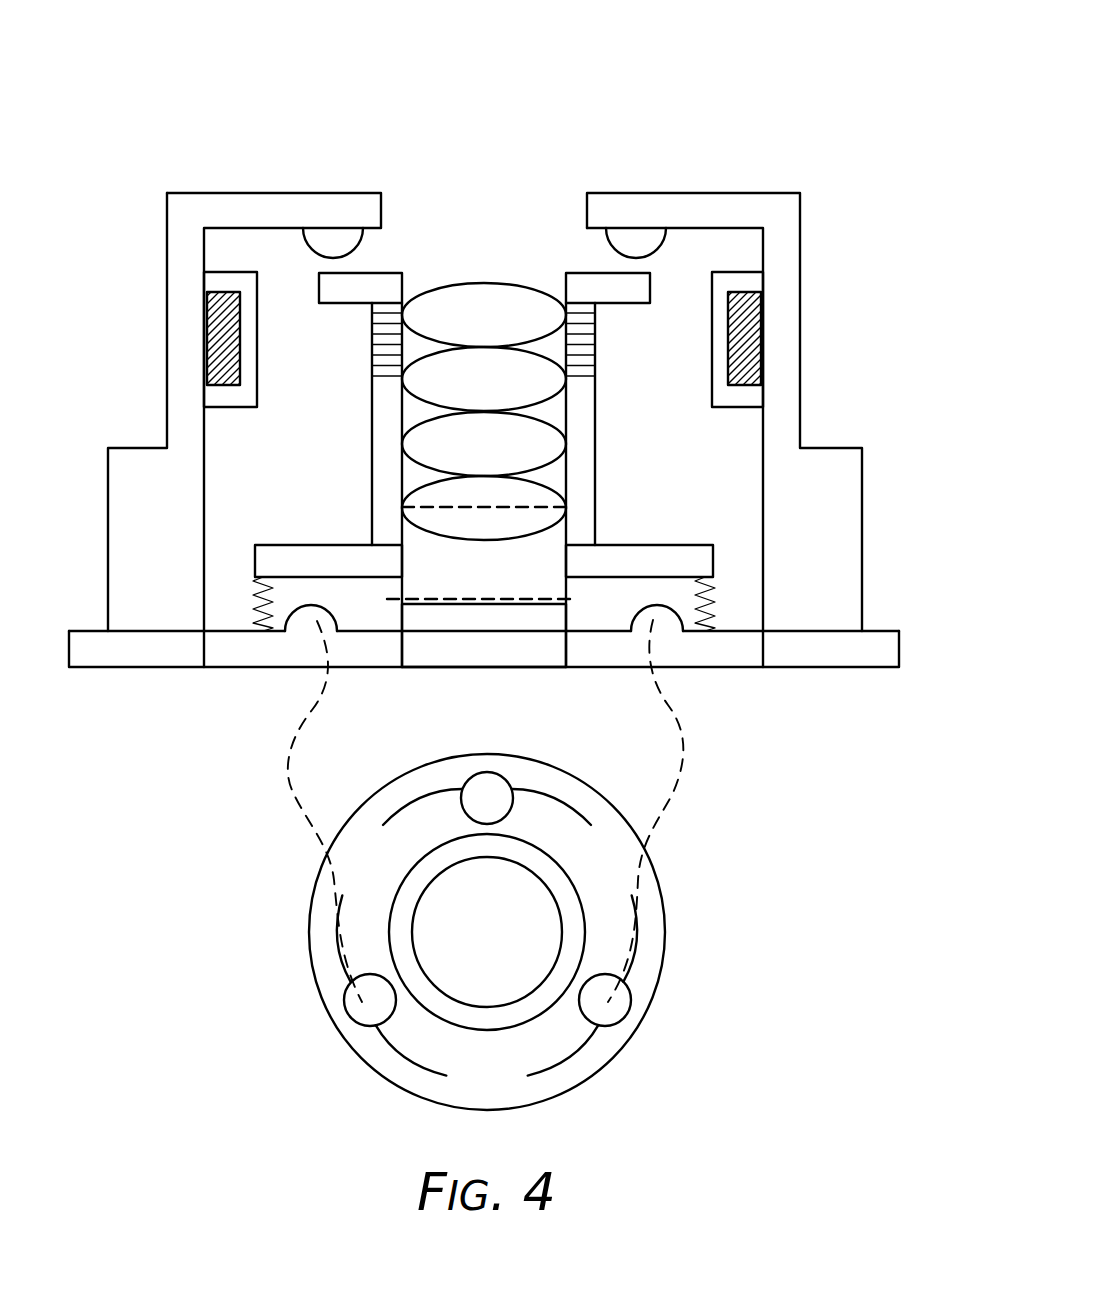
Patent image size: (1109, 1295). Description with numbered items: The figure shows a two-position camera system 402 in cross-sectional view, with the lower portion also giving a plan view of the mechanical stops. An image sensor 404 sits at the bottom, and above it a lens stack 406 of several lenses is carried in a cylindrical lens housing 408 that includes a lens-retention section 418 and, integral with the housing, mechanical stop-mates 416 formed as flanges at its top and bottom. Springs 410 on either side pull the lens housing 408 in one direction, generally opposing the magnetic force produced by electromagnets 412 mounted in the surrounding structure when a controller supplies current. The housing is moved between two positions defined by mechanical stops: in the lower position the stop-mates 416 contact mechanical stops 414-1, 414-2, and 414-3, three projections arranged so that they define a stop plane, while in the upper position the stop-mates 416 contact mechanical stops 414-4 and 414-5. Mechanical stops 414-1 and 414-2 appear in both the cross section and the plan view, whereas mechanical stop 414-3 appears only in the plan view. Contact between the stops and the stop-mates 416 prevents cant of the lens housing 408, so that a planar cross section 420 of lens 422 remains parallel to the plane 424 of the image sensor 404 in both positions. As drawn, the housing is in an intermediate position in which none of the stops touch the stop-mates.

The two-position camera system 402 is at (779, 58).
The image sensor 404 is at (458, 617).
The lens stack 406 is at (494, 391).
The lens housing 408 is at (329, 440).
The springs 410 is at (260, 605).
The electromagnets 412 is at (204, 332).
The mechanical stop 414-1 is at (330, 815).
The mechanical stop 414-2 is at (644, 815).
The mechanical stop 414-3 is at (487, 798).
The mechanical stop 414-4 is at (333, 242).
The mechanical stop 414-5 is at (635, 242).
The mechanical stop-mates 416 is at (632, 285).
The lens-retention section 418 is at (578, 462).
The planar cross section 420 is at (485, 507).
The lens 422 is at (537, 522).
The plane of image sensor 424 is at (485, 600).